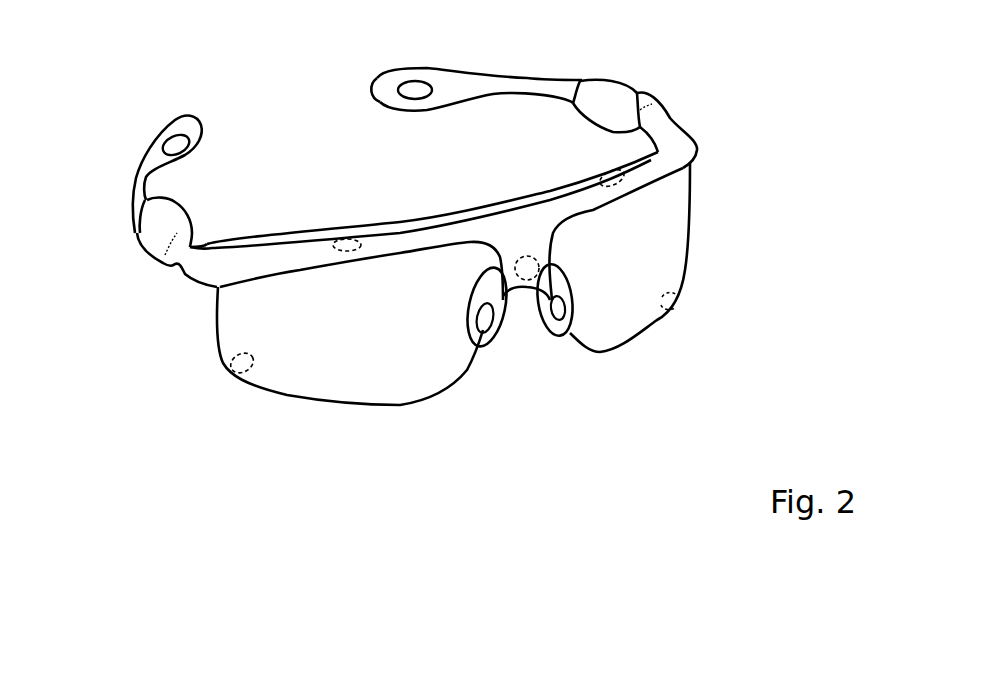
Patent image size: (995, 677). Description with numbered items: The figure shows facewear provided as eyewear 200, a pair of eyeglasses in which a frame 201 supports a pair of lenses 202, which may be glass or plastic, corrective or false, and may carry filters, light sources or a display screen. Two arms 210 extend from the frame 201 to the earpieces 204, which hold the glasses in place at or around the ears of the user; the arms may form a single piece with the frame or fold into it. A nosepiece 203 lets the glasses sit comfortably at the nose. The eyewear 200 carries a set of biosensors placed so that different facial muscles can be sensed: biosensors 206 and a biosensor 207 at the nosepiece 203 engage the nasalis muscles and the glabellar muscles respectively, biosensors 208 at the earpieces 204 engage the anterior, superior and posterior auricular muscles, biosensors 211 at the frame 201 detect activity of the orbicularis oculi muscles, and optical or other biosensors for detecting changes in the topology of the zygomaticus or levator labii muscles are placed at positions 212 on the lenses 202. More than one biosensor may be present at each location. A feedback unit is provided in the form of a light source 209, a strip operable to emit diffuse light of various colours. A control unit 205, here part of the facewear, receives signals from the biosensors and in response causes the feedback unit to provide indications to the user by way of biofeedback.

The eyewear 200 is at (407, 285).
The frame 201 is at (697, 147).
The lenses 202 is at (466, 318).
The nosepiece 203 is at (484, 262).
The earpieces 204 is at (371, 163).
The control unit 205 is at (143, 248).
The biosensors 206 is at (467, 317).
The biosensor 207 is at (523, 253).
The biosensors 208 is at (187, 148).
The light source 209 is at (295, 238).
The arms 210 is at (135, 195).
The biosensors 211 is at (367, 232).
The positions 212 is at (466, 357).